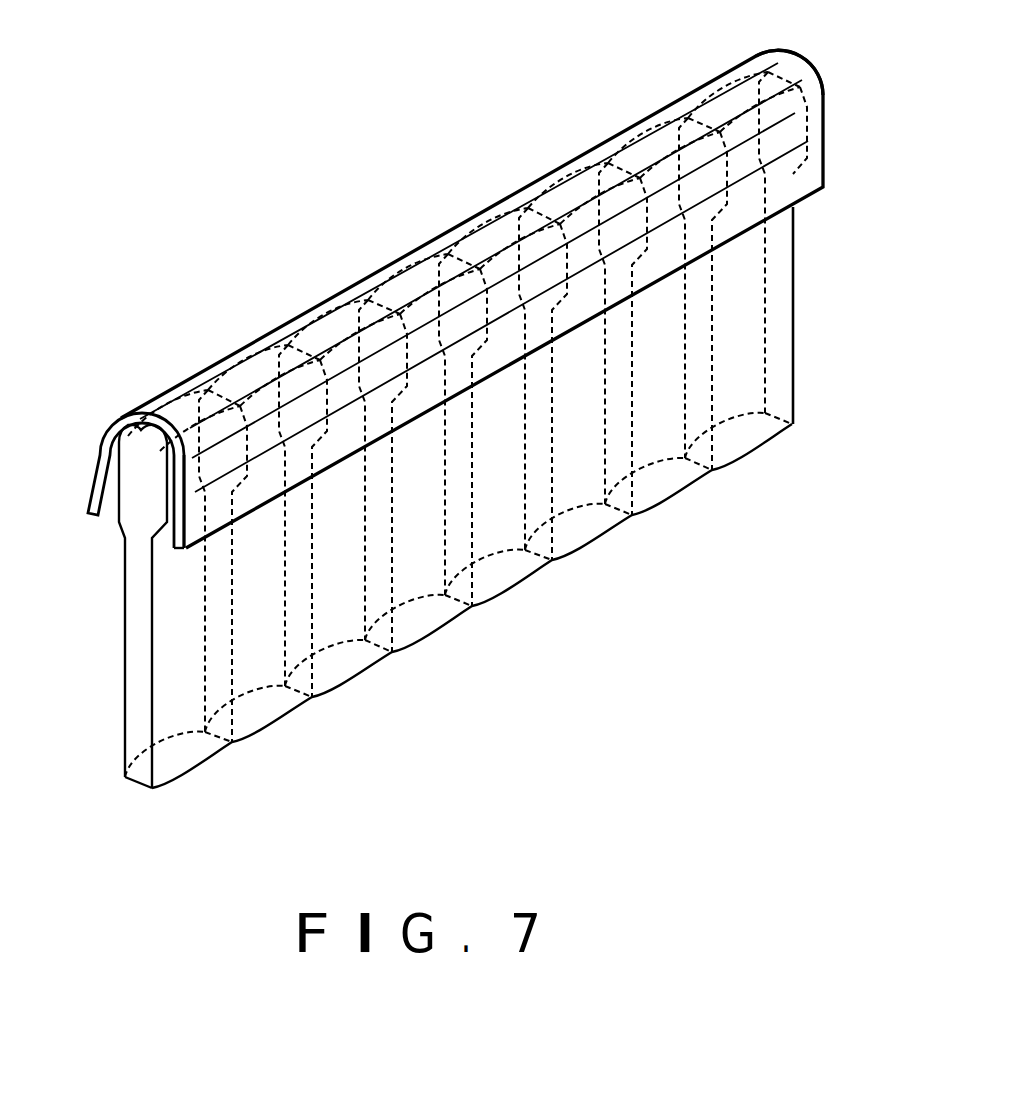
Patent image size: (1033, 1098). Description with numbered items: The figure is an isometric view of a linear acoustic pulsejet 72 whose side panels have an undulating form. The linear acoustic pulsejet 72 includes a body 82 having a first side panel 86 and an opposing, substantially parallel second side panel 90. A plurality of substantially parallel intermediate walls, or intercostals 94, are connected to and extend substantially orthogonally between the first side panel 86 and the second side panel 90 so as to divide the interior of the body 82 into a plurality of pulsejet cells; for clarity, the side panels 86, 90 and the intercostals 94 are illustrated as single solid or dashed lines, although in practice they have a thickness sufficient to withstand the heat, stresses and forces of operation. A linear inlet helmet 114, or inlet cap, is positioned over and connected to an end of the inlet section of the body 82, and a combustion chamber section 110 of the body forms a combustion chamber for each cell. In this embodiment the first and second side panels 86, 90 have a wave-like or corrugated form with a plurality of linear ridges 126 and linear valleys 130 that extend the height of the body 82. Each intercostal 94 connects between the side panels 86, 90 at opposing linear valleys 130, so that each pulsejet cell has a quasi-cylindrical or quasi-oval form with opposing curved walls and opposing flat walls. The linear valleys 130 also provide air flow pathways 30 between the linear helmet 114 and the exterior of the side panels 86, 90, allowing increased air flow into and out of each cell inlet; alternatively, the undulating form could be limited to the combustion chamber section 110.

The air flow pathway 30 is at (169, 553).
The linear acoustic pulsejet 72 is at (190, 260).
The body 82 is at (143, 590).
The first side panel 86 is at (124, 640).
The second side panel 90 is at (153, 689).
The intercostals 94 is at (796, 322).
The combustion chamber section 110 is at (148, 491).
The linear inlet helmet 114 is at (800, 55).
The linear ridges 126 is at (758, 460).
The linear valleys 130 is at (794, 428).